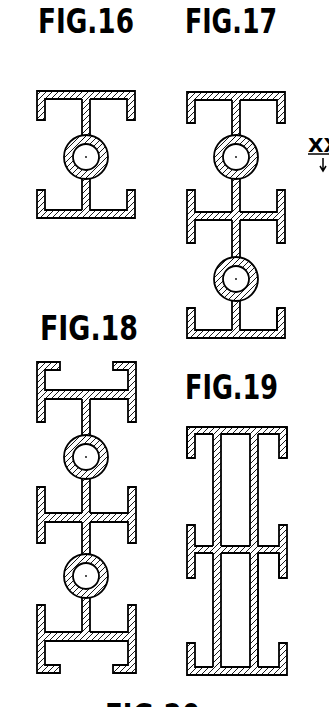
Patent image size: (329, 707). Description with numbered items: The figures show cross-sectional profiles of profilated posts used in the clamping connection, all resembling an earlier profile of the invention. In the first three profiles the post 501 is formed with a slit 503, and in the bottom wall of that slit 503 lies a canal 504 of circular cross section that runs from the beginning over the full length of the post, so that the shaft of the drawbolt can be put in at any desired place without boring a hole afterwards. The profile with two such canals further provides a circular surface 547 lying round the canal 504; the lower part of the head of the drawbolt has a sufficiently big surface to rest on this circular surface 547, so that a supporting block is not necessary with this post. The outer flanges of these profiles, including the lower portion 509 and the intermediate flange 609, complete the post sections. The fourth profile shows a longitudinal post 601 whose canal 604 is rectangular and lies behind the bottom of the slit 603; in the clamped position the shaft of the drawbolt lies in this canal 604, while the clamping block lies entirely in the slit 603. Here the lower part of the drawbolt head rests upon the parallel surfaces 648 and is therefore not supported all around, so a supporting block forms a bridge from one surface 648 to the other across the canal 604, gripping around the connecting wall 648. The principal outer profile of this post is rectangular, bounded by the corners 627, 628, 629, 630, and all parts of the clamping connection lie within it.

In FIG. 16, the longitudinal post 501 is at (112, 91).
In FIG. 17, the longitudinal post 501 is at (265, 96).
In FIG. 16, the slit 503 is at (112, 119).
In FIG. 17, the slit 503 is at (213, 238).
In FIG. 18, the slit 503 is at (108, 613).
In FIG. 16, the canal 504 is at (94, 159).
In FIG. 17, the canal 504 is at (253, 147).
In FIG. 18, the canal 504 is at (95, 460).
In FIG. 16, the lower flange portion 509 is at (135, 195).
In FIG. 17, the lower flange portion 509 is at (285, 313).
In FIG. 17, the circular surface 547 is at (254, 270).
In FIG. 19, the longitudinal post 601 is at (245, 427).
In FIG. 17, the slit 603 is at (303, 307).
In FIG. 19, the slit 603 is at (270, 570).
In FIG. 19, the canal 604 is at (240, 483).
In FIG. 17, the intermediate flange 609 is at (258, 213).
In FIG. 19, the intermediate flange 609 is at (285, 528).
In FIG. 19, the corner of principal outer profile 627 is at (189, 428).
In FIG. 19, the corner of principal outer profile 628 is at (286, 428).
In FIG. 19, the corner of principal outer profile 629 is at (287, 676).
In FIG. 19, the corner of principal outer profile 630 is at (187, 676).
In FIG. 19, the parallel surface 648 is at (258, 635).